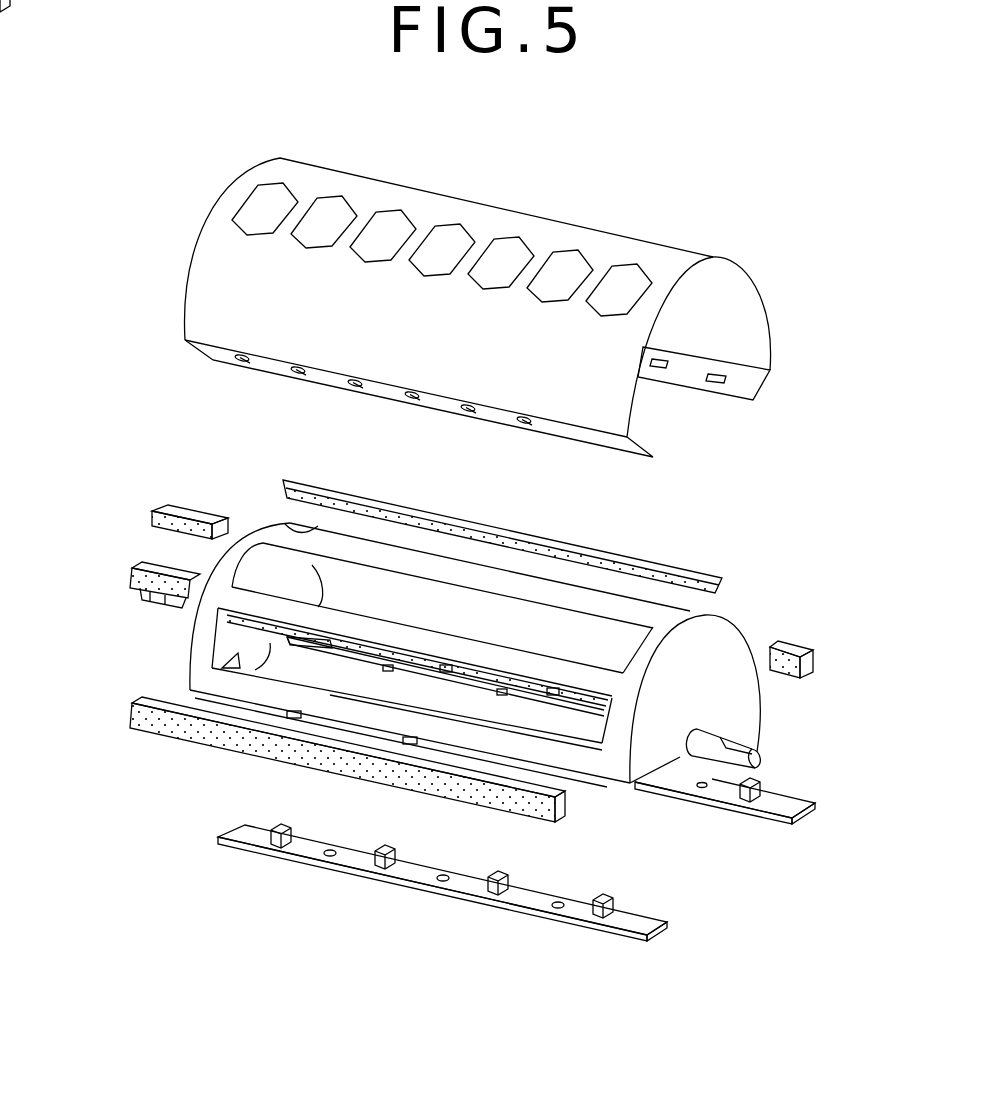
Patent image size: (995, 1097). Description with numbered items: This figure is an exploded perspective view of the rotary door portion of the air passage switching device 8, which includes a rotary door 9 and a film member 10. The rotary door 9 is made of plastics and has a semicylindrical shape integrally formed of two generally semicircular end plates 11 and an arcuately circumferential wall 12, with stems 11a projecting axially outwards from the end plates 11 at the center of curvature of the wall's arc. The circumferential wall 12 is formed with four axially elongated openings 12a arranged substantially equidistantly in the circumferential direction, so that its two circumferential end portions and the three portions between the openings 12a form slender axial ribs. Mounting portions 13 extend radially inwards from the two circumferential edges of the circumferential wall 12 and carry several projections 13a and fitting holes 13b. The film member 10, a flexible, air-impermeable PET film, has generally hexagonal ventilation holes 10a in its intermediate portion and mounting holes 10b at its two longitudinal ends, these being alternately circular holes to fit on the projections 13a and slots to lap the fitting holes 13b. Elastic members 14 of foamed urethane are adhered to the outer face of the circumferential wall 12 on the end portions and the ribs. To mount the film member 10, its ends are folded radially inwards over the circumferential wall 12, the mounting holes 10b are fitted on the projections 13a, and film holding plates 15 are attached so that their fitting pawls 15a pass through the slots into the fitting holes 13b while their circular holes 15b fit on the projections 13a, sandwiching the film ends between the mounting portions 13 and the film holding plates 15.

The air passage switching device 8 is at (156, 354).
The rotary door 9 is at (723, 628).
The film member 10 is at (670, 260).
The ventilation holes 10a is at (383, 228).
The mounting holes 10b is at (303, 368).
The end plates 11 is at (237, 638).
The stems 11a is at (757, 757).
The circumferential wall 12 is at (270, 528).
The openings 12a is at (443, 555).
The mounting portions 13 is at (480, 678).
The projections 13a is at (357, 802).
The fitting holes 13b is at (335, 647).
The elastic members 14 is at (183, 505).
The film holding plates 15 is at (400, 887).
The fitting pawls 15a is at (510, 882).
The circular holes 15b is at (445, 875).